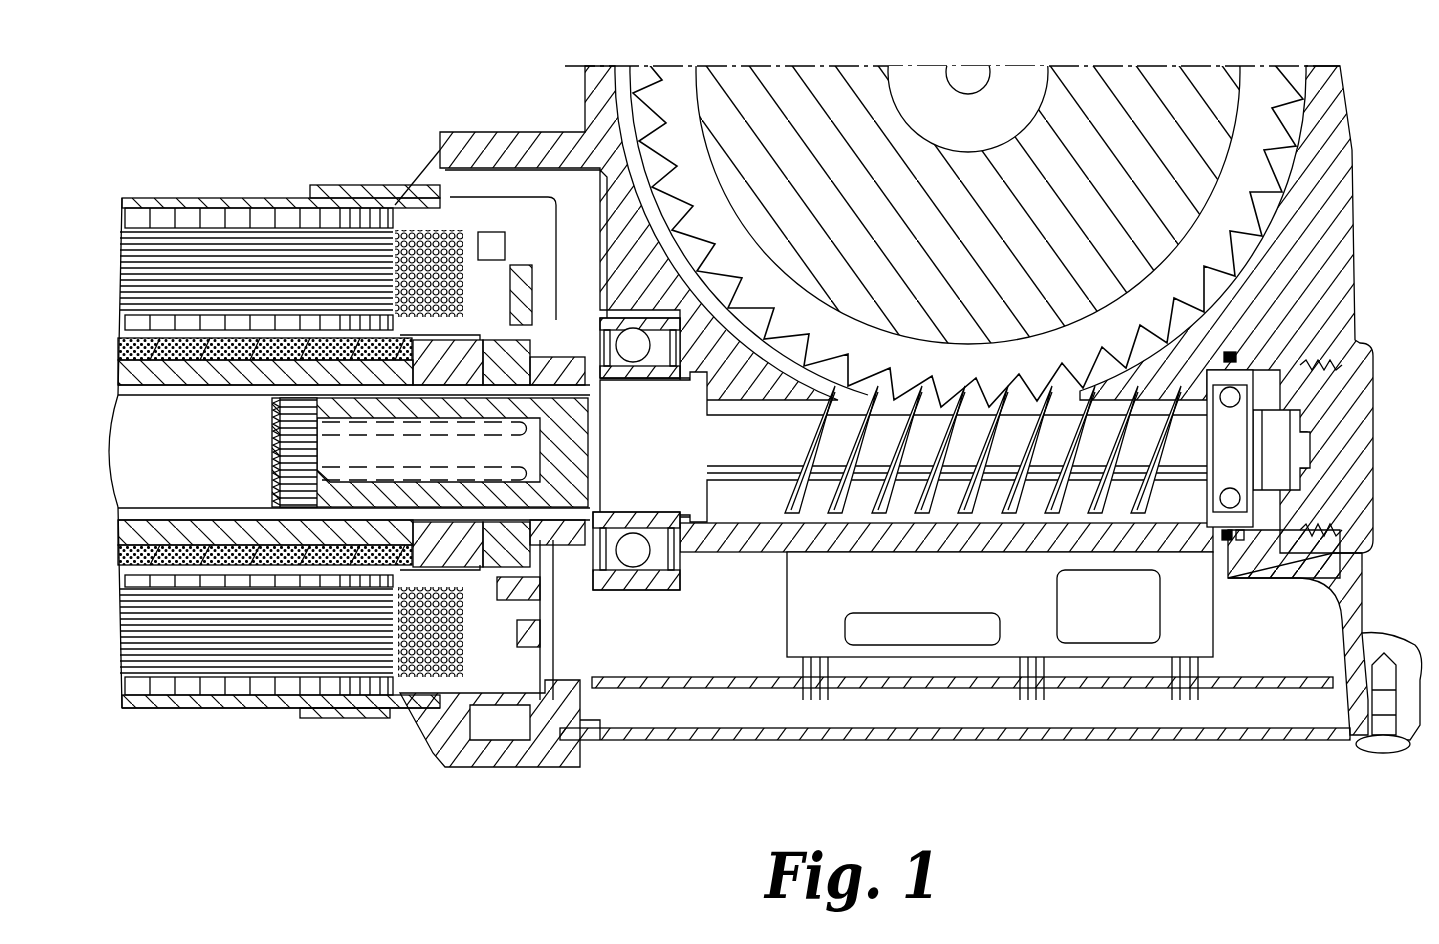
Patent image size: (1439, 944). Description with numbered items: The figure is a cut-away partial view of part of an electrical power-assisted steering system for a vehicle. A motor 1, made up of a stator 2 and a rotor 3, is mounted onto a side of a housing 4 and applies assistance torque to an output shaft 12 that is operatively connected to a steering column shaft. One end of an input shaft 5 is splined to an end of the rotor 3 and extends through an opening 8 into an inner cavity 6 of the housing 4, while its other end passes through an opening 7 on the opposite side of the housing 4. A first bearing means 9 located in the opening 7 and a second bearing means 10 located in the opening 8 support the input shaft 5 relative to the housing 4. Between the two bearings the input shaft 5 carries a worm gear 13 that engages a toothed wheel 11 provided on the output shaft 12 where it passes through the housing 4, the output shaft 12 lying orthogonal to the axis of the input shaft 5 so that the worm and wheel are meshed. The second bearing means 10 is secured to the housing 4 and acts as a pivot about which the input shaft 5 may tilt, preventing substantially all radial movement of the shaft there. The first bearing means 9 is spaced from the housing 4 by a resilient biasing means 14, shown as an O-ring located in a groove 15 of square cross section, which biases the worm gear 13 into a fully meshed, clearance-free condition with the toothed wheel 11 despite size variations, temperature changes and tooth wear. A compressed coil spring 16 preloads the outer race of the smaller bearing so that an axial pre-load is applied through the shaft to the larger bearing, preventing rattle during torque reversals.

The motor 1 is at (218, 733).
The stator 2 is at (258, 698).
The rotor 3 is at (160, 500).
The housing 4 is at (1355, 268).
The input shaft 5 is at (736, 484).
The inner cavity 6 is at (1143, 500).
The opening 7 is at (1292, 392).
The opening 8 is at (612, 592).
The first bearing means 9 is at (1215, 532).
The second bearing means 10 is at (660, 592).
The toothed wheel 11 is at (1290, 143).
The output shaft 12 is at (845, 66).
The worm gear 13 is at (793, 482).
The resilient biasing means 14 is at (1227, 540).
The groove 15 is at (1240, 540).
The compressed coil spring 16 is at (1285, 512).